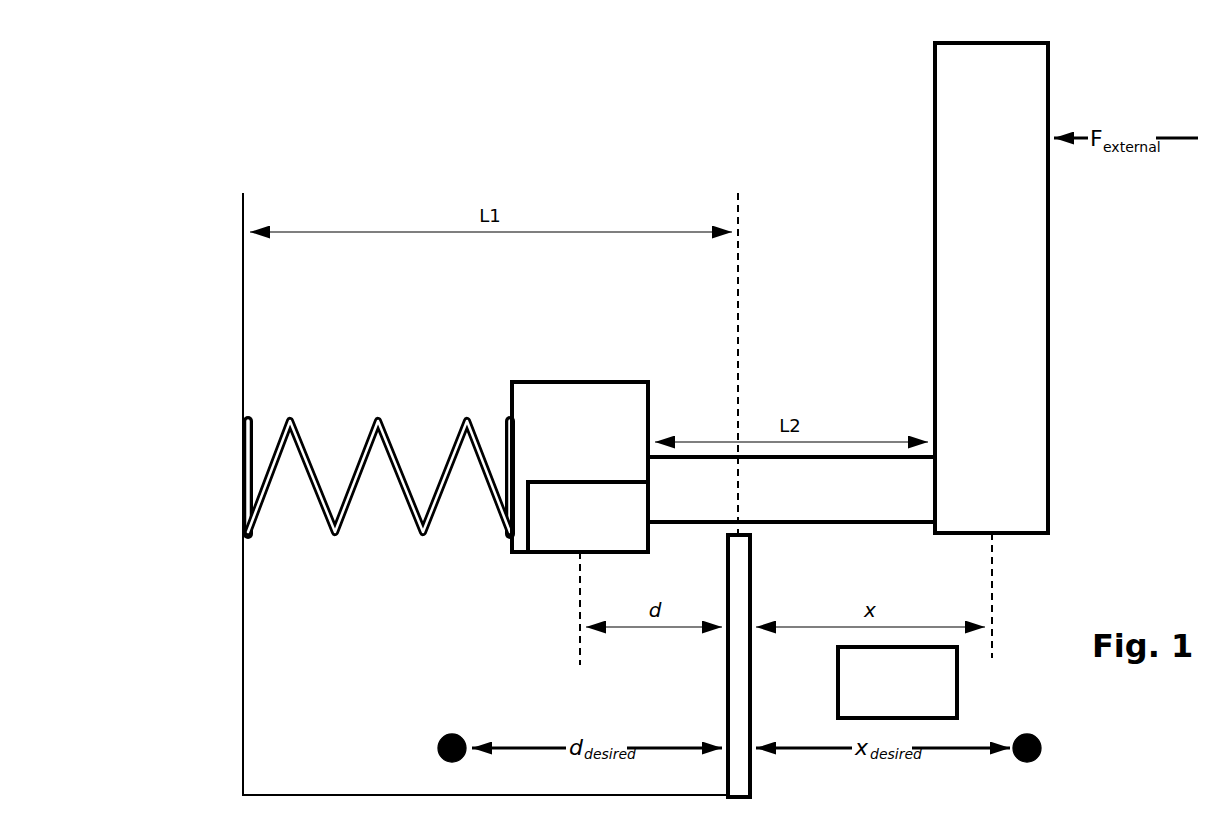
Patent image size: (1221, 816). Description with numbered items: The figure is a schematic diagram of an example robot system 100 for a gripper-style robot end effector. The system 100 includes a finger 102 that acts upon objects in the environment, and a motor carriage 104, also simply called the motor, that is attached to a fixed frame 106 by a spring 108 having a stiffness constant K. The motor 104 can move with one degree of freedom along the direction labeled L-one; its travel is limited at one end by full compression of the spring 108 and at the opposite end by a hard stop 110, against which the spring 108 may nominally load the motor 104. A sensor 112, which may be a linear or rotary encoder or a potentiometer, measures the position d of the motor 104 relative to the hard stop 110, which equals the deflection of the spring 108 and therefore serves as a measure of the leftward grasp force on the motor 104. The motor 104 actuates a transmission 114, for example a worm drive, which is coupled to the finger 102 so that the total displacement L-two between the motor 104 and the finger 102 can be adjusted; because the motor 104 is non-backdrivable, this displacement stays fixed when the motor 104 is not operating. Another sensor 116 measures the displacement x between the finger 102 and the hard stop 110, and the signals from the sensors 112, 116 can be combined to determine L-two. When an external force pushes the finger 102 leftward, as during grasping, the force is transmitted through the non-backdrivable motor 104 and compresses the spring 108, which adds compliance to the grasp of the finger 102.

The robot system 100 is at (178, 172).
The finger 102 is at (991, 288).
The motor carriage 104 is at (580, 467).
The fixed frame 106 is at (243, 683).
The spring 108 is at (348, 436).
The hard stop 110 is at (750, 718).
The sensor 112 is at (588, 517).
The transmission 114 is at (791, 489).
The sensor 116 is at (897, 682).